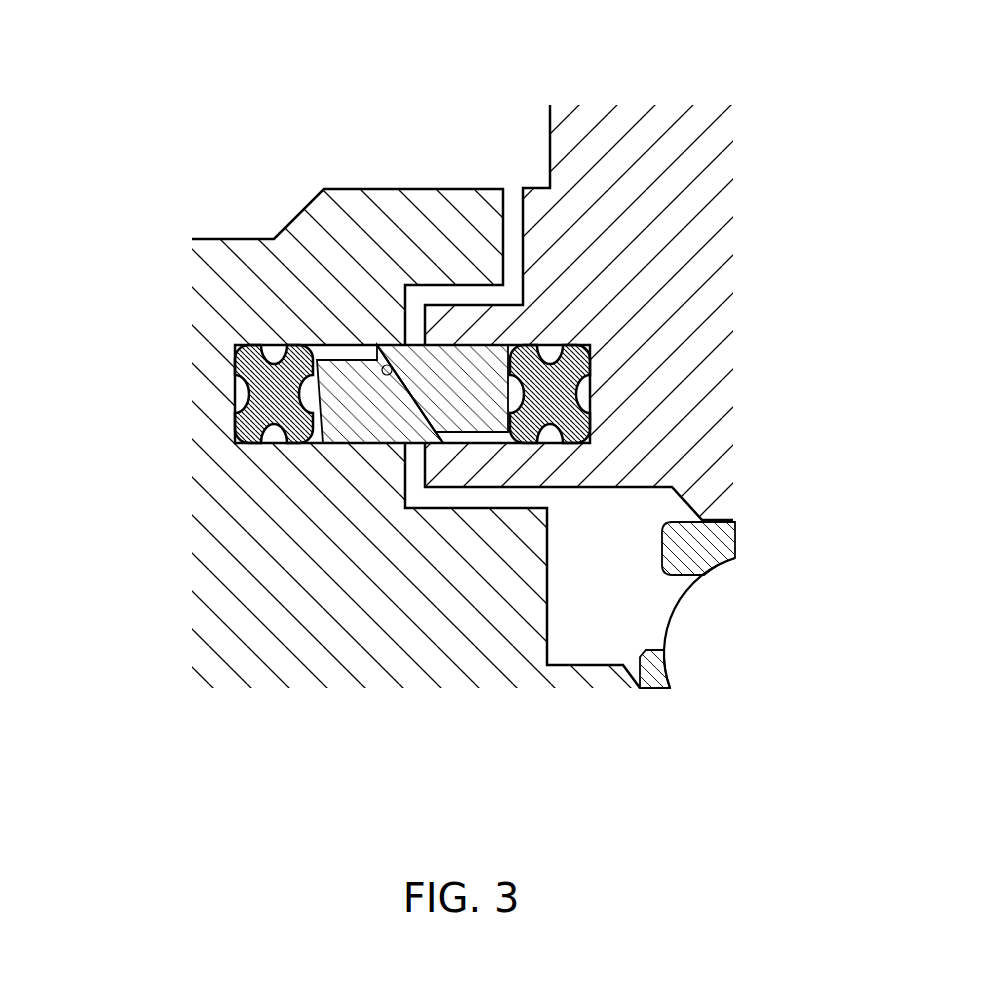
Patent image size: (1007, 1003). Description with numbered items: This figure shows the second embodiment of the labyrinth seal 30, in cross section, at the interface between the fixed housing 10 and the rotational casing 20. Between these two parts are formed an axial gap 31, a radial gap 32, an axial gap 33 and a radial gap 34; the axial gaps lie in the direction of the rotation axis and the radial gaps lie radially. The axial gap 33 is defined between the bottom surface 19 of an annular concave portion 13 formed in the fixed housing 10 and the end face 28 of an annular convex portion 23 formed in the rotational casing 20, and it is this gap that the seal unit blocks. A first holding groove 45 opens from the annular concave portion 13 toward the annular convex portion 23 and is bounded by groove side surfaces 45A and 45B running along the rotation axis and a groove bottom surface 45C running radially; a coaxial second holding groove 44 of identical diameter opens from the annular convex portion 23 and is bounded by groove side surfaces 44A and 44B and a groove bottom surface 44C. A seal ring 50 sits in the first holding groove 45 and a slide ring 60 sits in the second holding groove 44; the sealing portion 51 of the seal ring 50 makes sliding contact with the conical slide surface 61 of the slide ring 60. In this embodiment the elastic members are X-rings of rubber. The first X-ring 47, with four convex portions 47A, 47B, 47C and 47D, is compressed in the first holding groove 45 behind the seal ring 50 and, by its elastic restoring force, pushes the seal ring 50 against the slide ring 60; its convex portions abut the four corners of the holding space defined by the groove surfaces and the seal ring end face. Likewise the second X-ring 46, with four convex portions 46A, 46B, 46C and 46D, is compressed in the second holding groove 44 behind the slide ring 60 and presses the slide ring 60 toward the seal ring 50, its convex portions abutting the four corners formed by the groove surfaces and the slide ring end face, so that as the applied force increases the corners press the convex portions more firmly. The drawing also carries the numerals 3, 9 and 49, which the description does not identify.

The shaft 3 is at (746, 698).
The space 9 is at (590, 615).
The fixed housing 10 is at (195, 233).
The annular concave portion 13 is at (415, 343).
The bottom surface 19 is at (341, 350).
The rotational casing 20 is at (752, 110).
The annular convex portion 23 is at (523, 477).
The end face 28 is at (420, 478).
The labyrinth seal 30 is at (532, 62).
The axial gap 31 is at (508, 207).
The radial gap 32 is at (458, 297).
The axial gap 33 is at (415, 300).
The radial gap 34 is at (490, 509).
The second holding groove 44 is at (850, 348).
The groove side surface 44A is at (590, 355).
The groove side surface 44B is at (590, 440).
The groove bottom surface 44C is at (590, 402).
The first holding groove 45 is at (62, 325).
The groove side surface 45A is at (235, 350).
The groove side surface 45B is at (235, 437).
The groove bottom surface 45C is at (235, 372).
The second X-ring 46 is at (850, 197).
The convex portion 46A is at (520, 345).
The convex portion 46B is at (547, 345).
The convex portion 46C is at (567, 345).
The convex portion 46D is at (583, 345).
The first X-ring 47 is at (210, 757).
The convex portion 47A is at (312, 445).
The convex portion 47B is at (273, 445).
The convex portion 47C is at (260, 445).
The convex portion 47D is at (250, 445).
The groove side wall 49 is at (237, 460).
The seal ring 50 is at (347, 360).
The sealing portion 51 is at (436, 436).
The slide ring 60 is at (508, 445).
The slide surface 61 is at (430, 338).